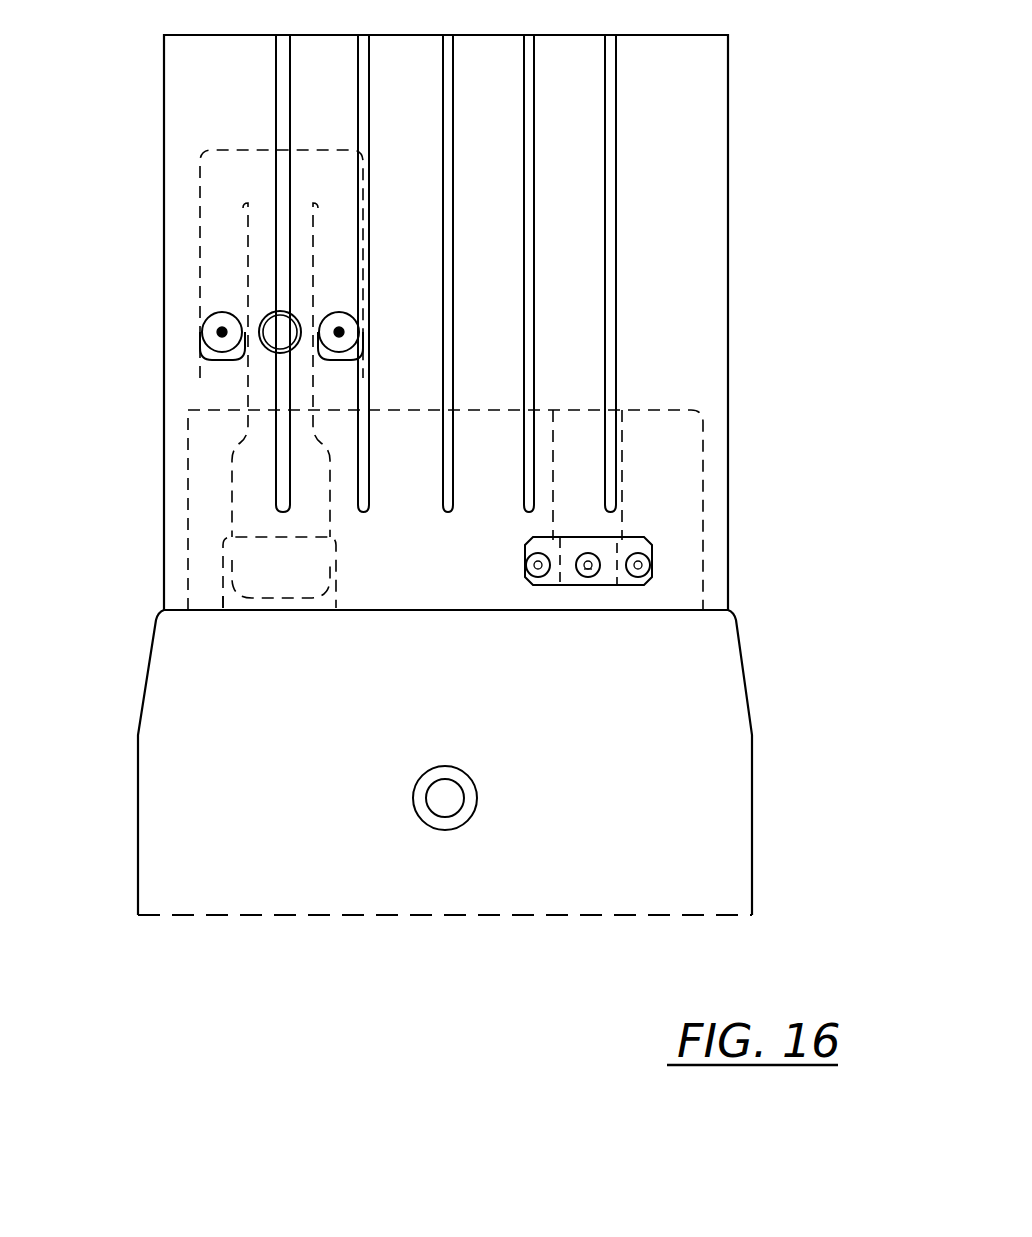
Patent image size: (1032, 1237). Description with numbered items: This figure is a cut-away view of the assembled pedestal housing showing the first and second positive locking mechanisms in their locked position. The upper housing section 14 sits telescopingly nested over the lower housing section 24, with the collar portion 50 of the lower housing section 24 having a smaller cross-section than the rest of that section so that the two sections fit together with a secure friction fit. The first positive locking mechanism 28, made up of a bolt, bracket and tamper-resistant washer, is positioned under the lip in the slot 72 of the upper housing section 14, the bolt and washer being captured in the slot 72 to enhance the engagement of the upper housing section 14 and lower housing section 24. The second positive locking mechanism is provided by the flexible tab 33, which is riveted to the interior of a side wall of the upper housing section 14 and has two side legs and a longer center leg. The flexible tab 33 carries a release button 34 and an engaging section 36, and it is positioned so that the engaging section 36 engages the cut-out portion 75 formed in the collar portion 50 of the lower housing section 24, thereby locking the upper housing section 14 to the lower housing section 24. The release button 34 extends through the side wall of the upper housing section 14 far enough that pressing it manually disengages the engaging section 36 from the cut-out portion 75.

The upper housing section 14 is at (728, 142).
The lower housing section 24 is at (725, 710).
The first positive locking mechanism 28 is at (714, 551).
The slot 72 is at (688, 573).
The flexible tab 33 is at (208, 376).
The release button 34 is at (273, 327).
The engaging section 36 is at (255, 558).
The collar portion 50 is at (672, 502).
The cut-out portion 75 is at (225, 612).